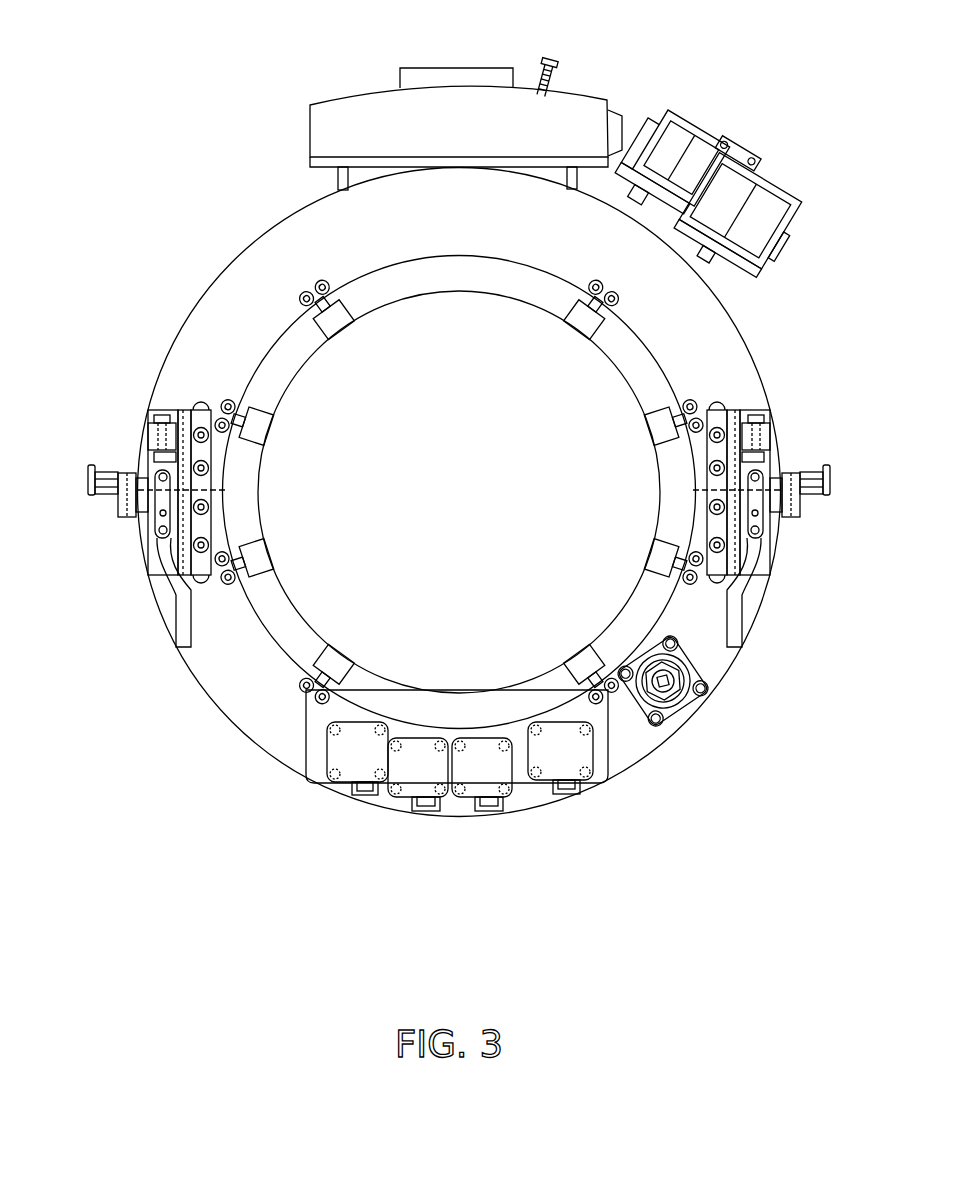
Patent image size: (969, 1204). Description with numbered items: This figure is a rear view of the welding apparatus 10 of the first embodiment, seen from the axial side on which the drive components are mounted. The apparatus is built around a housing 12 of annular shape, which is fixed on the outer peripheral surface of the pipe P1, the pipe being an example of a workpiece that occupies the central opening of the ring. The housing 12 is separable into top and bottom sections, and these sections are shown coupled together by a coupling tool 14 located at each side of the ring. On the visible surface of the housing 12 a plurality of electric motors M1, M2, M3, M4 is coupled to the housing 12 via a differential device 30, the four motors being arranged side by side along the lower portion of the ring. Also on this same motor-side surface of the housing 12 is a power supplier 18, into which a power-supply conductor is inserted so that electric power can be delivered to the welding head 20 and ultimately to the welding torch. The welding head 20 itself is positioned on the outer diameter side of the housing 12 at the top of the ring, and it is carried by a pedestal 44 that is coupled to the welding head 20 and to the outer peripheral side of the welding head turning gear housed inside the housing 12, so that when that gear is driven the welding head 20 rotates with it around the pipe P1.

The welding apparatus 10 is at (473, 965).
The housing 12 is at (728, 360).
The coupling tool 14 is at (796, 455).
The power supplier 18 is at (668, 683).
The welding head 20 is at (324, 68).
The differential device 30 is at (317, 730).
The pedestal 44 is at (558, 178).
The pipe P1 is at (613, 360).
The electric motor M1 is at (360, 768).
The electric motor M2 is at (425, 785).
The electric motor M3 is at (485, 785).
The electric motor M4 is at (568, 768).